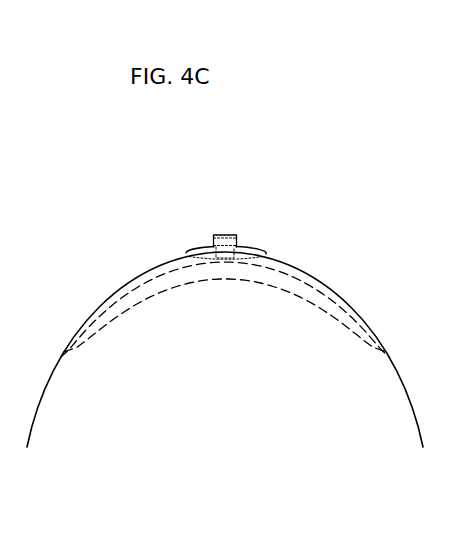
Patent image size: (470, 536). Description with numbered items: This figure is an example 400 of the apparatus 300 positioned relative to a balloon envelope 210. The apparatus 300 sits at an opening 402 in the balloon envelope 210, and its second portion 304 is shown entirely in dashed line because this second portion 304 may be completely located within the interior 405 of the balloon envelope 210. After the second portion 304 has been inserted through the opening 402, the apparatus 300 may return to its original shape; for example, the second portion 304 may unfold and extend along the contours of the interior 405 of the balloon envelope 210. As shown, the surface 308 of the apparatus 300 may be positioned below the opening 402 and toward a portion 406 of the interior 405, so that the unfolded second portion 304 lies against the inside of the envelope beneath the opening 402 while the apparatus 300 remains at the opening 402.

The example 400 is at (341, 85).
The interior 405 is at (231, 349).
The second portion 304 is at (98, 308).
The balloon envelope 210 is at (248, 363).
The portion 406 is at (131, 287).
The surface 308 is at (152, 300).
The opening 402 is at (200, 252).
The apparatus 300 is at (238, 221).